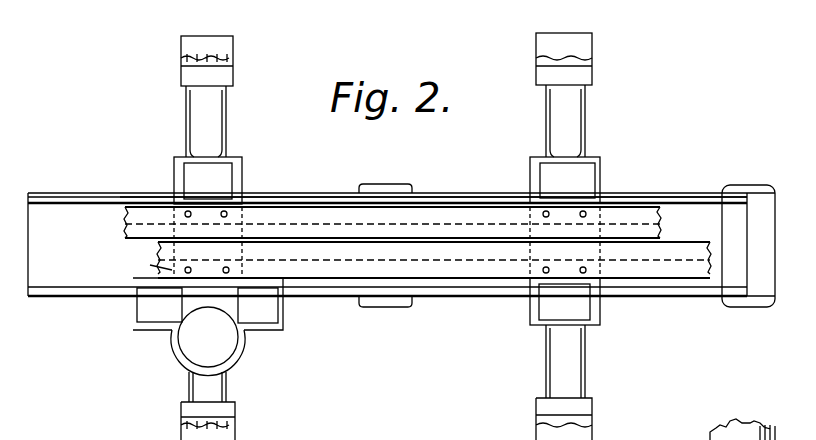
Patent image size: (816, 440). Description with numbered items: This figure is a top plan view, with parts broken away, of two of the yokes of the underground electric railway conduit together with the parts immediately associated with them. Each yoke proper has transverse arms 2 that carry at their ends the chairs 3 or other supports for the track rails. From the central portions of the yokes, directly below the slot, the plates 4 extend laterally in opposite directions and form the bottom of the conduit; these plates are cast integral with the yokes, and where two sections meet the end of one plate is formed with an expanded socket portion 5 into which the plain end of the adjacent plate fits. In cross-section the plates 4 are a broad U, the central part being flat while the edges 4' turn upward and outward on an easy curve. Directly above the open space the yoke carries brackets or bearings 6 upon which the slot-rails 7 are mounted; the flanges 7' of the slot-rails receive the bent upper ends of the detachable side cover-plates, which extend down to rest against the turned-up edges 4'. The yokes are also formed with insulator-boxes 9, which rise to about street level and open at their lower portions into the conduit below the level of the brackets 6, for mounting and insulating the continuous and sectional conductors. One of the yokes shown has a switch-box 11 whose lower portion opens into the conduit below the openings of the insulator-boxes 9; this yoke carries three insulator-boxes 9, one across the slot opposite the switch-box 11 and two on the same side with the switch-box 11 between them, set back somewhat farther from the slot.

The transverse arms 2 is at (385, 243).
The chairs 3 is at (234, 58).
The plates 4 is at (387, 244).
The edges 4' is at (433, 251).
The socket portion 5 is at (390, 186).
The brackets or bearings 6 is at (605, 213).
The slot-rails 7 is at (434, 246).
The flanges 7' is at (392, 251).
The insulator-boxes 9 is at (366, 243).
The switch-box 11 is at (208, 341).